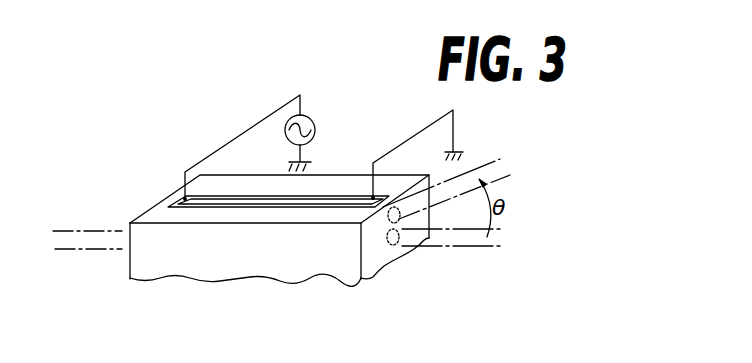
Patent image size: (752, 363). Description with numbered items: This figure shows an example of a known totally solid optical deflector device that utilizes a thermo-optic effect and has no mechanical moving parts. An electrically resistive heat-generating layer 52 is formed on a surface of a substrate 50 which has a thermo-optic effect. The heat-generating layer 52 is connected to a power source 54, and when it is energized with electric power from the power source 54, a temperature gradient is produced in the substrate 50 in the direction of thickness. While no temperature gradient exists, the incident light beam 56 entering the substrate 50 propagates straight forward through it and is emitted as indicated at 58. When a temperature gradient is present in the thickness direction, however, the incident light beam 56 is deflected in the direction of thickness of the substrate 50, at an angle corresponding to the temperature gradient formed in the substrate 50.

The substrate 50 is at (244, 266).
The electrically resistive heat-generating layer 52 is at (323, 201).
The power source 54 is at (309, 124).
The incident light beam 56 is at (72, 238).
The emitted light beam 58 is at (462, 236).